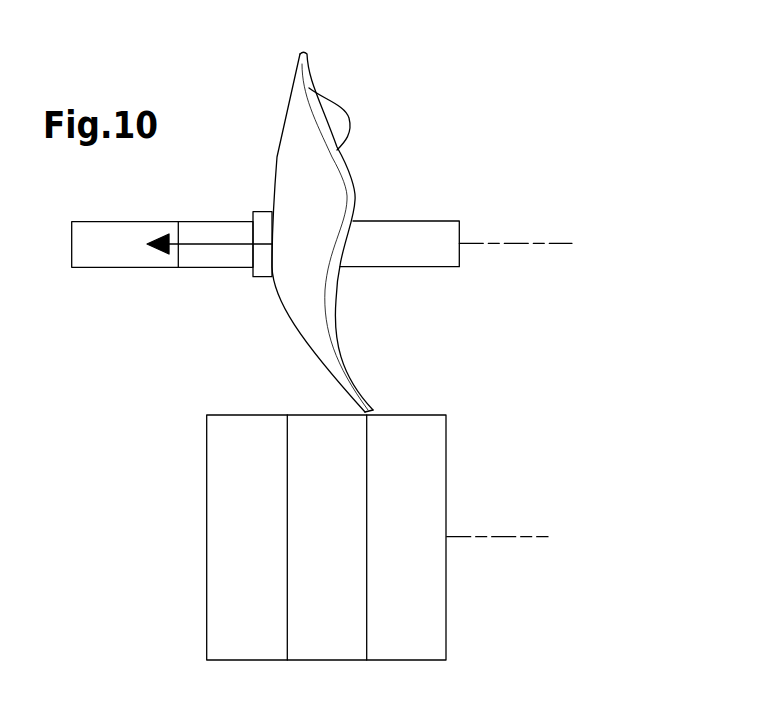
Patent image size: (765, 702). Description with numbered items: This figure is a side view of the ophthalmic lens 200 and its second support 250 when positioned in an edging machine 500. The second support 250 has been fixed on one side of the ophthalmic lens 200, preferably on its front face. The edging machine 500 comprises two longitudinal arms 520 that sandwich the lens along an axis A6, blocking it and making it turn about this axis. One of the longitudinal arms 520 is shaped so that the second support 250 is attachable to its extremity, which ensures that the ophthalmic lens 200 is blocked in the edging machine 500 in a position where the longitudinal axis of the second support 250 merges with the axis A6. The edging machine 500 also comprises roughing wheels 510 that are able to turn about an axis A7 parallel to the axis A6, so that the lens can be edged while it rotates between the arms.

The ophthalmic lens 200 is at (333, 103).
The edging machine 500 is at (385, 401).
The roughing wheels 510 is at (407, 412).
The longitudinal arms 520 is at (420, 220).
The second support 250 is at (213, 270).
The axis A6 is at (520, 243).
The axis A7 is at (498, 536).